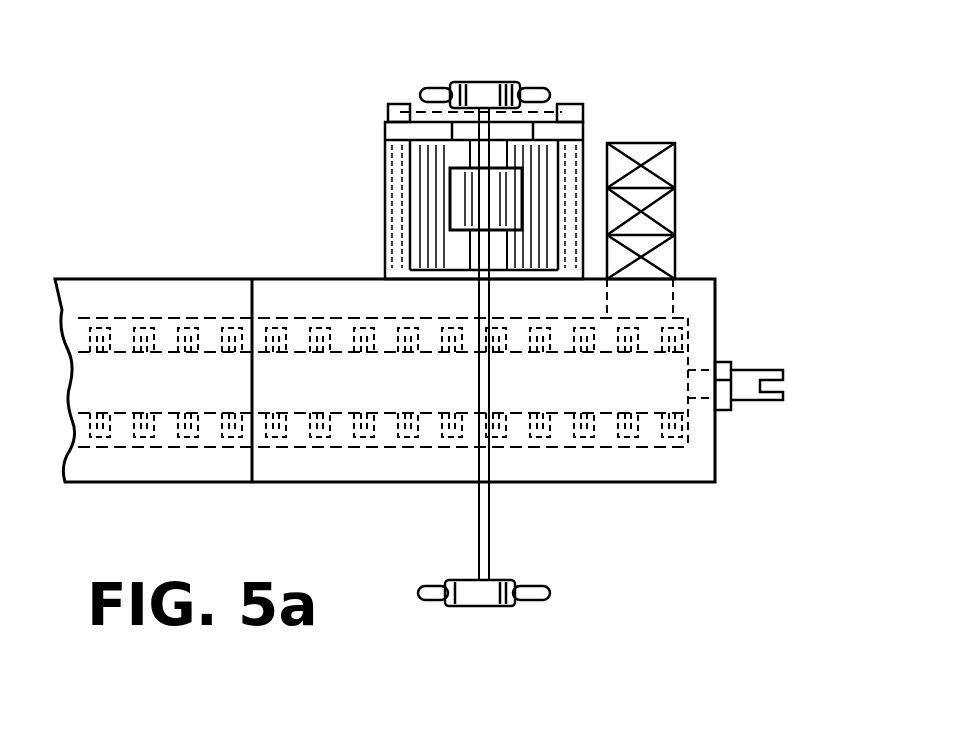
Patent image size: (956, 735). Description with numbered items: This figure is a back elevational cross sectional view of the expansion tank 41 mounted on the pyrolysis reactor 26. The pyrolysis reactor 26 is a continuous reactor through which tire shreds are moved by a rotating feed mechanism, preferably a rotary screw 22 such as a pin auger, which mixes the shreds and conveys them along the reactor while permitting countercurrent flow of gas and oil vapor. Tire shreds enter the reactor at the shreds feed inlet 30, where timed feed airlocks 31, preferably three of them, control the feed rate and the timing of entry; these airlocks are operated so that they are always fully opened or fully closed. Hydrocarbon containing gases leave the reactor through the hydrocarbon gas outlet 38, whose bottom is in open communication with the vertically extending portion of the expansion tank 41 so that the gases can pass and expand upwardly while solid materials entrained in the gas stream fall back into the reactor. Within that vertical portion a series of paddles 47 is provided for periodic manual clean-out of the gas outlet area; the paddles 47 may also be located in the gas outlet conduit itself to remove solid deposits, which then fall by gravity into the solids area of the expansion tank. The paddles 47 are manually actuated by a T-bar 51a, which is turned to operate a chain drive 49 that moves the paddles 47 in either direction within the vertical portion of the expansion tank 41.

The rotary screw 22 is at (738, 372).
The pyrolysis reactor 26 is at (160, 272).
The shreds feed inlet 30 is at (678, 279).
The airlocks 31 is at (658, 170).
The hydrocarbon gas outlet 38 is at (448, 190).
The expansion tank 41 is at (385, 163).
The paddles 47 is at (545, 170).
The chain drive 49 is at (548, 110).
The T-bar 51a is at (466, 86).